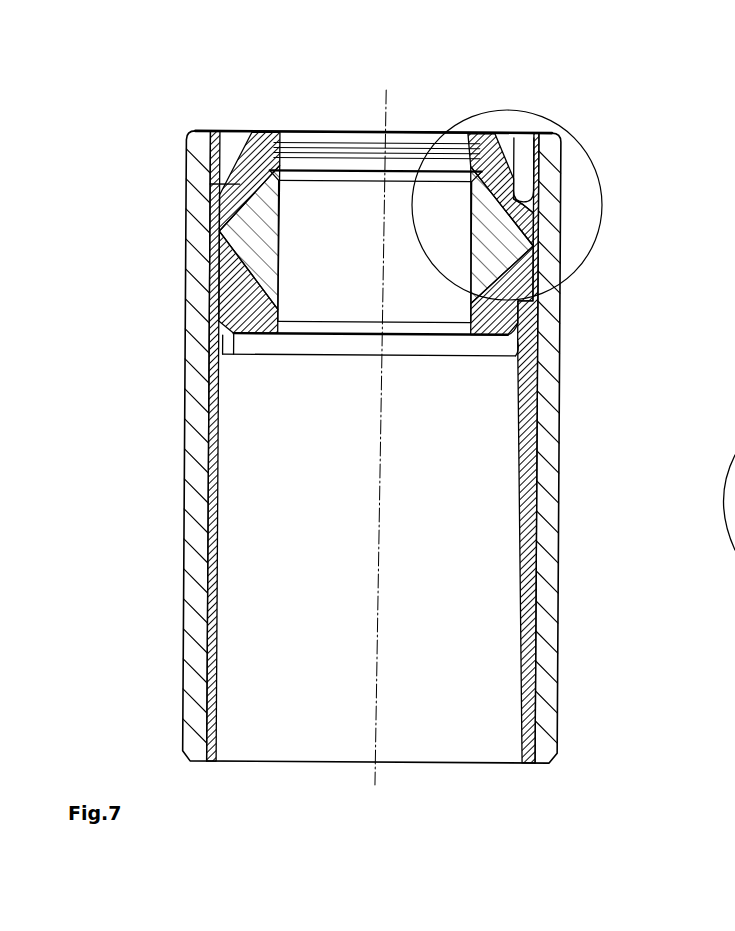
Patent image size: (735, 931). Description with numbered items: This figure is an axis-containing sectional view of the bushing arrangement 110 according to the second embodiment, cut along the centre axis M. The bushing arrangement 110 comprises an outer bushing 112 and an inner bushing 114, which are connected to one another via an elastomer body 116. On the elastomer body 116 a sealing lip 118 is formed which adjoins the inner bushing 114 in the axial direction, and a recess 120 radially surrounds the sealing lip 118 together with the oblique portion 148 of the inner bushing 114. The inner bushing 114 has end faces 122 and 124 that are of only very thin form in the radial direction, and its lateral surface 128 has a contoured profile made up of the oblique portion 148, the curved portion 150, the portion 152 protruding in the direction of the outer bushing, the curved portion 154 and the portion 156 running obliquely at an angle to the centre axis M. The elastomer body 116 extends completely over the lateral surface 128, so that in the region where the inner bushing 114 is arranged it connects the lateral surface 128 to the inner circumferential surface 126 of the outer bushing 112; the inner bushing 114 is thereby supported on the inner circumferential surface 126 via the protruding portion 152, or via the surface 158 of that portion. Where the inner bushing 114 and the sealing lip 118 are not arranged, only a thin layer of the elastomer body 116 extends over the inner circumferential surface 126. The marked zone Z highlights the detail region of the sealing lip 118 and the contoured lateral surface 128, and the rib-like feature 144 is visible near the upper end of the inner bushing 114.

The bushing arrangement 110 is at (567, 108).
The outer bushing 112 is at (196, 482).
The inner bushing 114 is at (563, 317).
The elastomer body 116 is at (537, 503).
The sealing lip 118 is at (278, 172).
The recess 120 is at (221, 157).
The end face 122 is at (475, 172).
The end face 124 is at (538, 343).
The inner circumferential surface 126 is at (196, 400).
The lateral surface 128 is at (528, 238).
The ribs 144 is at (277, 265).
The oblique portion 148 is at (238, 185).
The curved portion 150 is at (218, 213).
The protruding portion 152 is at (214, 243).
The curved portion 154 is at (212, 284).
The oblique portion 156 is at (214, 327).
The surface 158 is at (528, 277).
The detail zone Z is at (598, 180).
The centre axis M is at (376, 787).